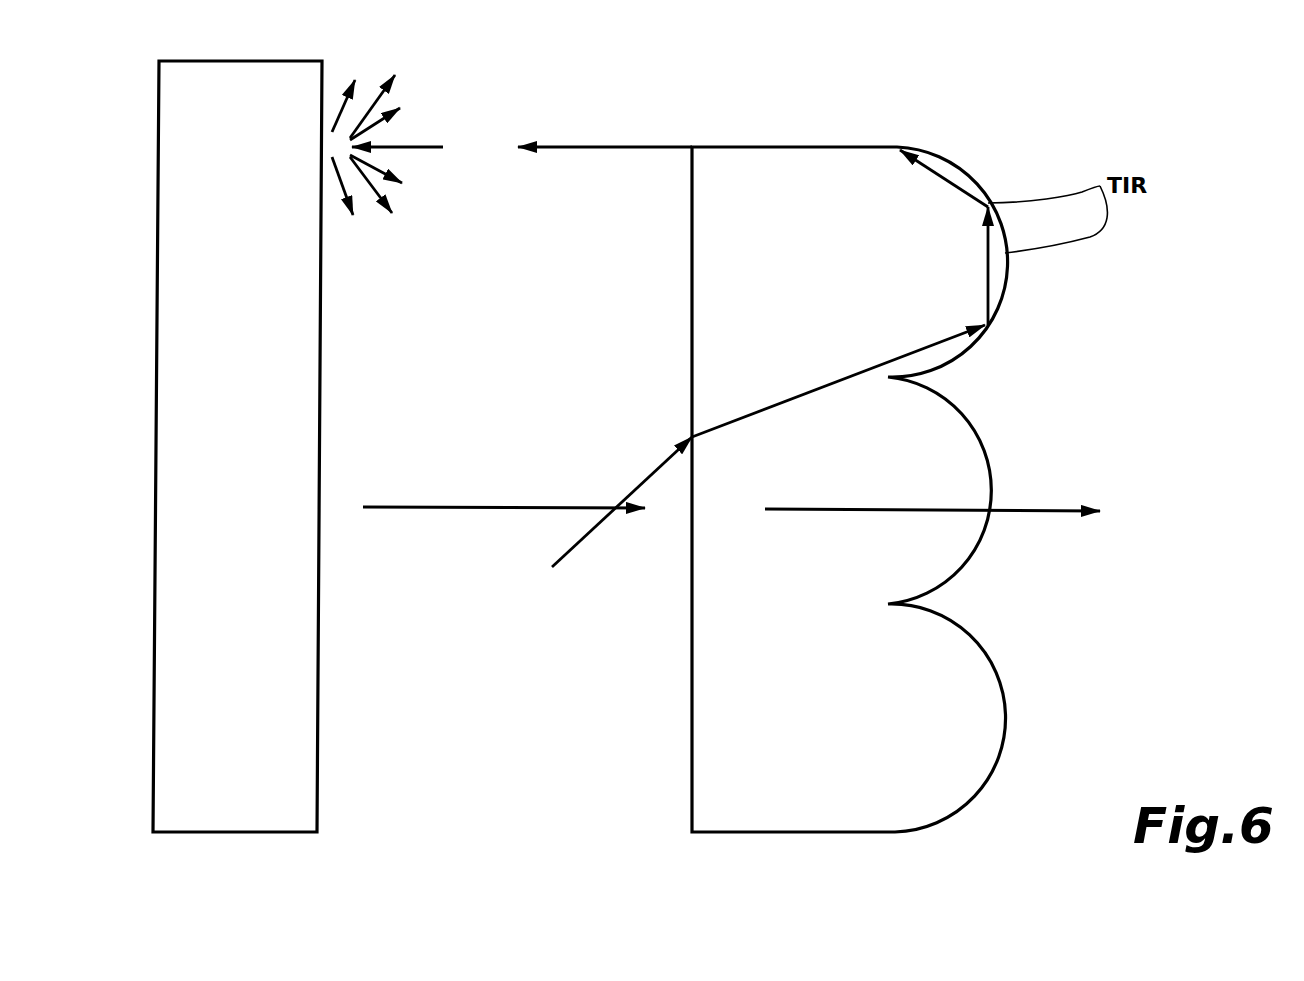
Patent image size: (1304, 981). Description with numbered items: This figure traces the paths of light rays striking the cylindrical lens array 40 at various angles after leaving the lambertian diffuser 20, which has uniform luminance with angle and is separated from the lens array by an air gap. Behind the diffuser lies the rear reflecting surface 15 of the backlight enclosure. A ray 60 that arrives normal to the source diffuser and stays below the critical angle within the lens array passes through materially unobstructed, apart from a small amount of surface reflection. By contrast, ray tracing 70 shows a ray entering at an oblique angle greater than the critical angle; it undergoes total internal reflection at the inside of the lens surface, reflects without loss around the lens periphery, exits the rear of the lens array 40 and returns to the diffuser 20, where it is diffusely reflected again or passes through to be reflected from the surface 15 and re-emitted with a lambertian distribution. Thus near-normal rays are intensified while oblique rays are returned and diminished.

The rear reflecting surface 15 is at (245, 834).
The lambertian diffuser 20 is at (323, 62).
The cylindrical lens array 40 is at (863, 834).
The incident light ray 60 is at (465, 505).
The ray tracing 70 is at (573, 553).